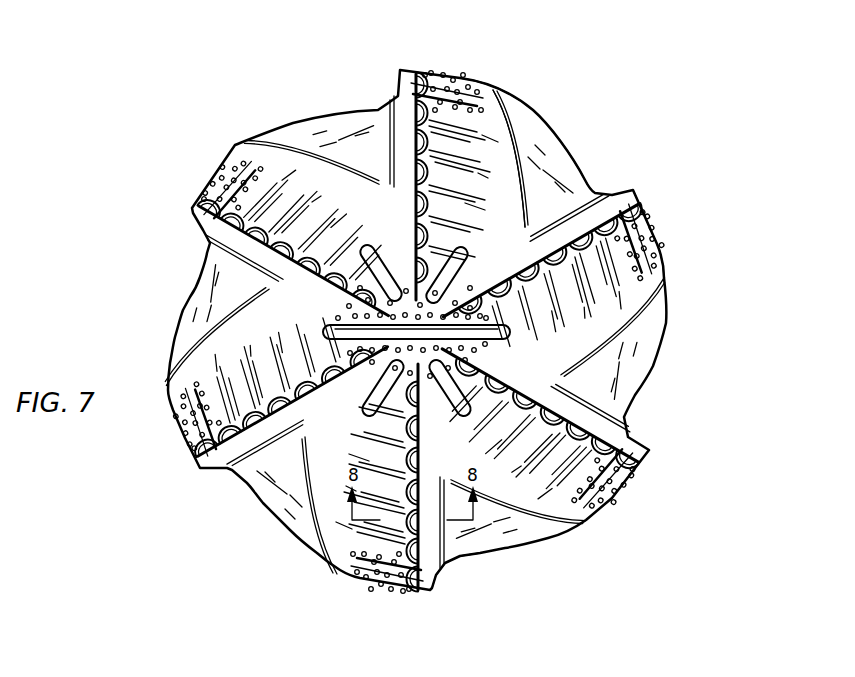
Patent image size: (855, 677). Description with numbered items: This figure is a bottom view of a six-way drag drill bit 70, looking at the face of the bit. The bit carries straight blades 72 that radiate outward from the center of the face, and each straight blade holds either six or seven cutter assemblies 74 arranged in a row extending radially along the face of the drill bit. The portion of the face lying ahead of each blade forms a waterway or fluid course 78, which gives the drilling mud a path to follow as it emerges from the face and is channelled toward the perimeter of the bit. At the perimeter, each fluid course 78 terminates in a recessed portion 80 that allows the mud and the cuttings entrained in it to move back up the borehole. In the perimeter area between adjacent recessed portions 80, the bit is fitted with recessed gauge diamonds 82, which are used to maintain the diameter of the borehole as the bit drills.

The six-way drag drill bit 70 is at (705, 267).
The straight blades 72 is at (598, 196).
The cutter assemblies 74 is at (590, 259).
The fluid course 78 is at (543, 212).
The recessed portion 80 is at (586, 212).
The recessed gauge diamonds 82 is at (617, 493).